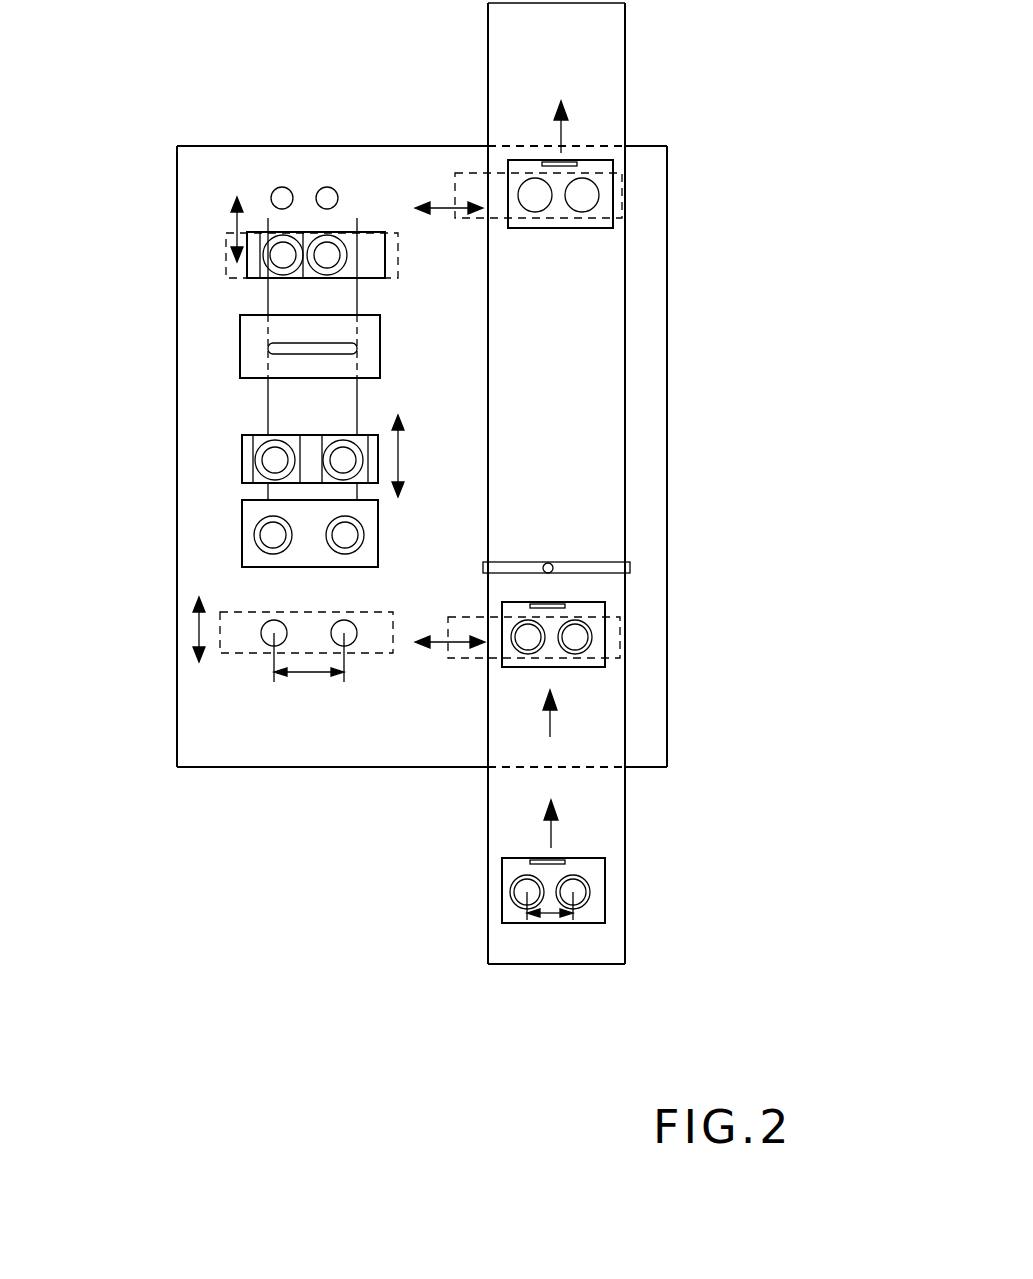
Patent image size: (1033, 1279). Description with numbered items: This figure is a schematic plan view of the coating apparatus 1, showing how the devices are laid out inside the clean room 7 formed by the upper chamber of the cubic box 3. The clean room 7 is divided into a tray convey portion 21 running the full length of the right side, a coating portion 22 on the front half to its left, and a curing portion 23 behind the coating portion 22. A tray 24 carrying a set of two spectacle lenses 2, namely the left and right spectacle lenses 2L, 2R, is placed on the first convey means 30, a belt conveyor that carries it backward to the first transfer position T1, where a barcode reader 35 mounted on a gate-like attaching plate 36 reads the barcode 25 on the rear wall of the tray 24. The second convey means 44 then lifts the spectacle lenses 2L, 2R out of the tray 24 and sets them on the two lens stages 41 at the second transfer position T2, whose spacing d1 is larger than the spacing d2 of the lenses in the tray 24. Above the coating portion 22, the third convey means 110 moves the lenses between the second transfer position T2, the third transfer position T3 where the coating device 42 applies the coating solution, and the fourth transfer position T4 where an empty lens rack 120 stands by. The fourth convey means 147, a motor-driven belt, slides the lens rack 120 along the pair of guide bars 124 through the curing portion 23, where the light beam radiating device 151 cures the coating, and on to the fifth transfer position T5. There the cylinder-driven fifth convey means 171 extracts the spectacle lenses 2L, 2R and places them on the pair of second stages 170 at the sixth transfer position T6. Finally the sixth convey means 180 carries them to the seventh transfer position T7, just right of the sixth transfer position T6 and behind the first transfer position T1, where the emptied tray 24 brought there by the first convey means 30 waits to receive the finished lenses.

The coating apparatus 1 is at (812, 47).
The spectacle lens 2 is at (580, 1035).
The left spectacle lens 2L is at (300, 233).
The right spectacle lens 2R is at (330, 258).
The cubic box 3 is at (663, 128).
The clean room 7 is at (350, 155).
The tray convey portion 21 is at (628, 437).
The coating portion 22 is at (380, 540).
The curing portion 23 is at (380, 328).
The tray 24 is at (613, 165).
The barcode 25 is at (537, 602).
The first convey means 30 is at (625, 803).
The barcode reader 35 is at (552, 566).
The attaching plate 36 is at (488, 560).
The lens stage 41 is at (273, 645).
The coating device 42 is at (242, 562).
The second convey means 44 is at (633, 648).
The third convey means 110 is at (245, 658).
The lens rack 120 is at (242, 465).
The guide bar 124 is at (350, 394).
The fourth convey means 147 is at (258, 412).
The light beam radiating device 151 is at (240, 362).
The second stage 170 is at (313, 203).
The fifth convey means 171 is at (228, 272).
The sixth convey means 180 is at (620, 228).
The first transfer position T1 is at (552, 637).
The second transfer position T2 is at (310, 632).
The third transfer position T3 is at (245, 522).
The fourth transfer position T4 is at (245, 447).
The fifth transfer position T5 is at (300, 280).
The sixth transfer position T6 is at (303, 190).
The seventh transfer position T7 is at (556, 193).
The distance between the two lens stages d1 is at (309, 673).
The distance between the two spectacle lenses in the tray d2 is at (550, 926).